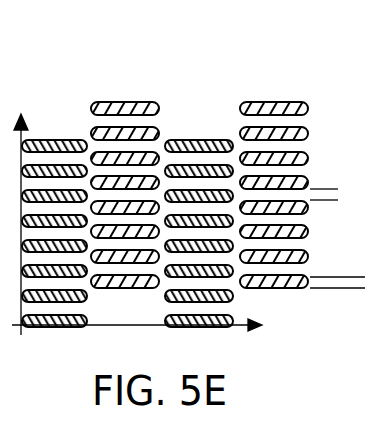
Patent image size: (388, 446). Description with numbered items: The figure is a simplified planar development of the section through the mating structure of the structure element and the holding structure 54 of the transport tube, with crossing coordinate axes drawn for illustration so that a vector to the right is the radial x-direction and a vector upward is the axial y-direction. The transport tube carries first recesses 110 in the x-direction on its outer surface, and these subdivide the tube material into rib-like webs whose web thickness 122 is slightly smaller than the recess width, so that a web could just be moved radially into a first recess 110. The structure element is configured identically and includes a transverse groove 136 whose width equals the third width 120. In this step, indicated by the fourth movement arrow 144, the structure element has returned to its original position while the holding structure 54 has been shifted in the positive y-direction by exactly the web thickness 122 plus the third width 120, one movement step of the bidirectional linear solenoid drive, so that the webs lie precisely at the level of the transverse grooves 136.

The holding structure 54 is at (128, 92).
The first recesses 110 is at (160, 121).
The third width 120 is at (332, 226).
The web thickness 122 is at (360, 313).
The transverse groove 136 is at (82, 305).
The fourth movement arrow 144 is at (53, 134).